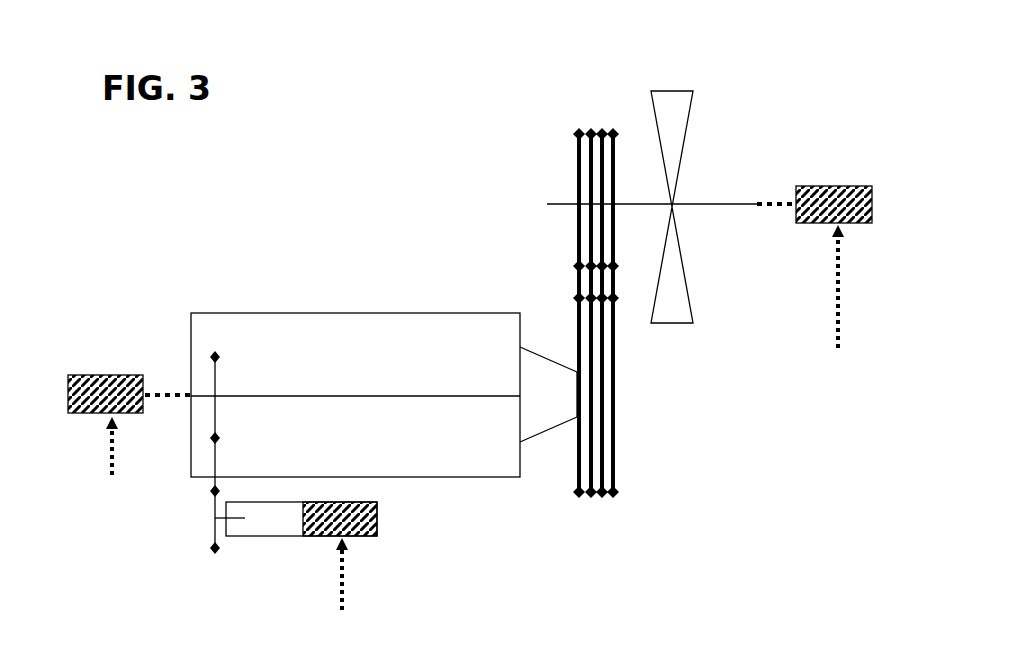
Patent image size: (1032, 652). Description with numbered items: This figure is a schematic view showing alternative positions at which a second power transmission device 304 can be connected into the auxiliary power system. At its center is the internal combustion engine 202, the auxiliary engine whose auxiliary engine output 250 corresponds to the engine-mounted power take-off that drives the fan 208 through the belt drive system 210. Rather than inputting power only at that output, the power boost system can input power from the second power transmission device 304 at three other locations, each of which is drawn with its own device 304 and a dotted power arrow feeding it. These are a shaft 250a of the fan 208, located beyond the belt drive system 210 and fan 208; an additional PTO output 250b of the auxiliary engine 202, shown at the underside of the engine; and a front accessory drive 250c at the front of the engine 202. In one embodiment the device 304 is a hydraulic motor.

The internal combustion engine 202 is at (440, 311).
The fan 208 is at (673, 90).
The belt drive system 210 is at (579, 168).
The auxiliary engine output 250 is at (578, 395).
The shaft of fan 250a is at (758, 206).
The additional PTO output 250b is at (228, 521).
The front accessory drive 250c is at (186, 395).
The second power transmission device 304 is at (103, 375).